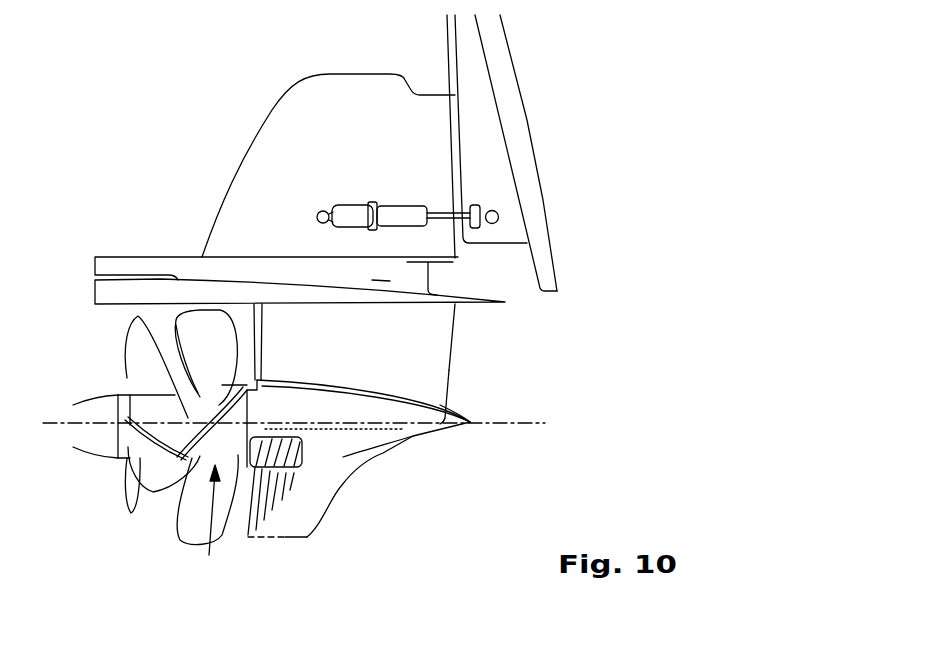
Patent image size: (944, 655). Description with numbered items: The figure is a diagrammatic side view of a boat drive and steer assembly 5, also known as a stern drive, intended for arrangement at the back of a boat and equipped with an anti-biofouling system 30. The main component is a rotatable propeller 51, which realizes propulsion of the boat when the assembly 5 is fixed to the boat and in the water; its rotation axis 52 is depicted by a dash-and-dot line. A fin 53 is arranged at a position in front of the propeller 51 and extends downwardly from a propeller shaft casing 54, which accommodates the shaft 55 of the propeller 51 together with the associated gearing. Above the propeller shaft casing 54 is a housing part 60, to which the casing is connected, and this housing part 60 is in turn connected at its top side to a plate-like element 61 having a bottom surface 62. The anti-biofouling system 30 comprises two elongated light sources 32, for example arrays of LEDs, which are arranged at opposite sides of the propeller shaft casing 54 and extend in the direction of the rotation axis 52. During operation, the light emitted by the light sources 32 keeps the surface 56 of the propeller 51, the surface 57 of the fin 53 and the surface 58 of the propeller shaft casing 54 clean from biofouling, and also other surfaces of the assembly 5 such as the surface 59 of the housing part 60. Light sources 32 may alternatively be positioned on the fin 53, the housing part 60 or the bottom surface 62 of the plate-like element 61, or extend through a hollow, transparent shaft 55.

The boat drive and steer assembly 5 is at (558, 100).
The plate-like element 61 is at (130, 295).
The bottom surface 62 is at (130, 305).
The surface 59 is at (422, 337).
The housing part 60 is at (425, 363).
The rotation axis 52 is at (533, 423).
The anti-biofouling system 30 is at (415, 433).
The light source 32 is at (403, 420).
The surface of the propeller shaft casing 58 is at (402, 438).
The propeller shaft casing 54 is at (358, 440).
The surface of the fin 57 is at (290, 515).
The fin 53 is at (308, 498).
The surface of the propeller 56 is at (155, 482).
The propeller 51 is at (133, 473).
The shaft 55 is at (209, 537).